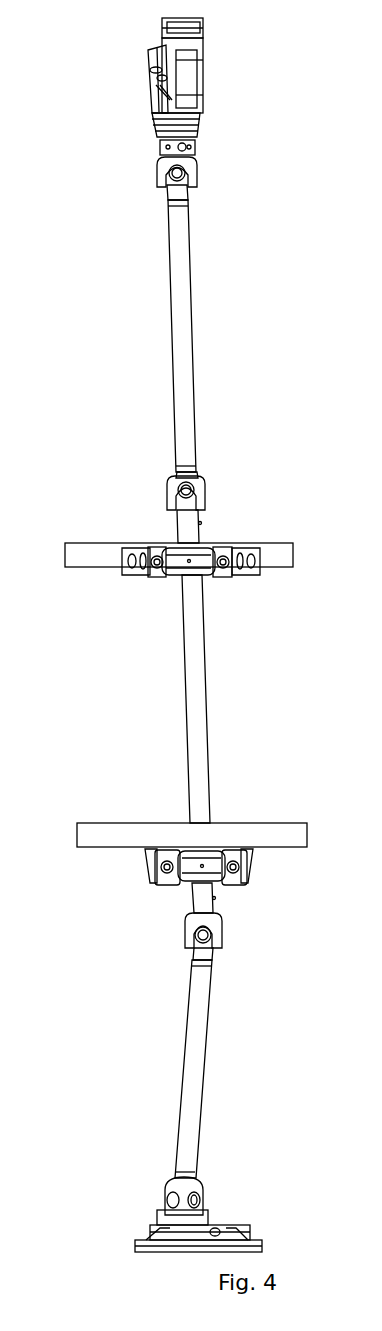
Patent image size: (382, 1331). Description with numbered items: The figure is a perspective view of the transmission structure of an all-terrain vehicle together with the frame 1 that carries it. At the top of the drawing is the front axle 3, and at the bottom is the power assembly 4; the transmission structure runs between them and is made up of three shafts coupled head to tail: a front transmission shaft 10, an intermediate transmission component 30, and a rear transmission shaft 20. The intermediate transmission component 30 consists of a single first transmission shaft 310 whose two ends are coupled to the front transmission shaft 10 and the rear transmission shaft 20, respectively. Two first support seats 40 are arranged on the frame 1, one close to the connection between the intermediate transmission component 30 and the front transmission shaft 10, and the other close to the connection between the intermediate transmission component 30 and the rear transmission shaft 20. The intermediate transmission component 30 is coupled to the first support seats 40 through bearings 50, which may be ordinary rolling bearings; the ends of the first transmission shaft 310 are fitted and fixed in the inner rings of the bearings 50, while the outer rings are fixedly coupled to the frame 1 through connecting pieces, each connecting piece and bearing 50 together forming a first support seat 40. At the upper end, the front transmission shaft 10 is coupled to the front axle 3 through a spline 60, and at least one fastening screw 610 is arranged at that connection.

The frame 1 is at (94, 553).
The front axle 3 is at (186, 78).
The power assembly 4 is at (243, 1225).
The front transmission shaft 10 is at (178, 313).
The rear transmission shaft 20 is at (192, 1067).
The intermediate transmission component 30 is at (241, 699).
The first support seat 40 is at (158, 572).
The bearing 50 is at (212, 543).
The spline 60 is at (160, 165).
The first transmission shaft 310 is at (196, 733).
The fastening screw 610 is at (190, 150).